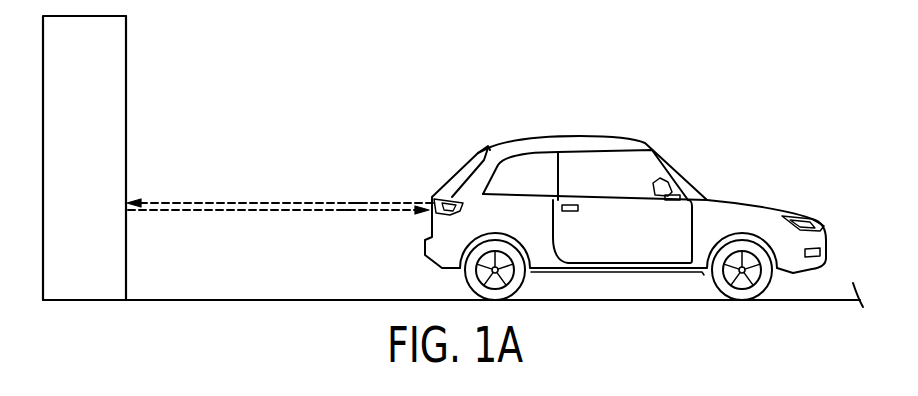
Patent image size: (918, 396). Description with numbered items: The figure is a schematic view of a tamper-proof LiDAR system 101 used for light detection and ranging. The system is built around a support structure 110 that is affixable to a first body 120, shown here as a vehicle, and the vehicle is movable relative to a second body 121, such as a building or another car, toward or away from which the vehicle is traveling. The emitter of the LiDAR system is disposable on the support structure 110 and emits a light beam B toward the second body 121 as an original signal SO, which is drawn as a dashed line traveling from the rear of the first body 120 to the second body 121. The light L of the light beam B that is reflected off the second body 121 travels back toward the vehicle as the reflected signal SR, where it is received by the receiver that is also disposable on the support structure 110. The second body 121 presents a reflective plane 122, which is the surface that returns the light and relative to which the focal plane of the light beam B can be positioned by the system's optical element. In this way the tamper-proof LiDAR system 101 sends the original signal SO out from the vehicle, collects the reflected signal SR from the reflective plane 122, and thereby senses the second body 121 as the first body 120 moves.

The tamper-proof LiDAR system 101 is at (618, 164).
The support structure 110 is at (434, 198).
The first body 120 is at (769, 210).
The second body 121 is at (105, 70).
The reflective plane 122 is at (127, 145).
The original signal SO is at (305, 197).
The reflected signal SR is at (295, 214).
The light beam B is at (365, 197).
The light L is at (355, 214).